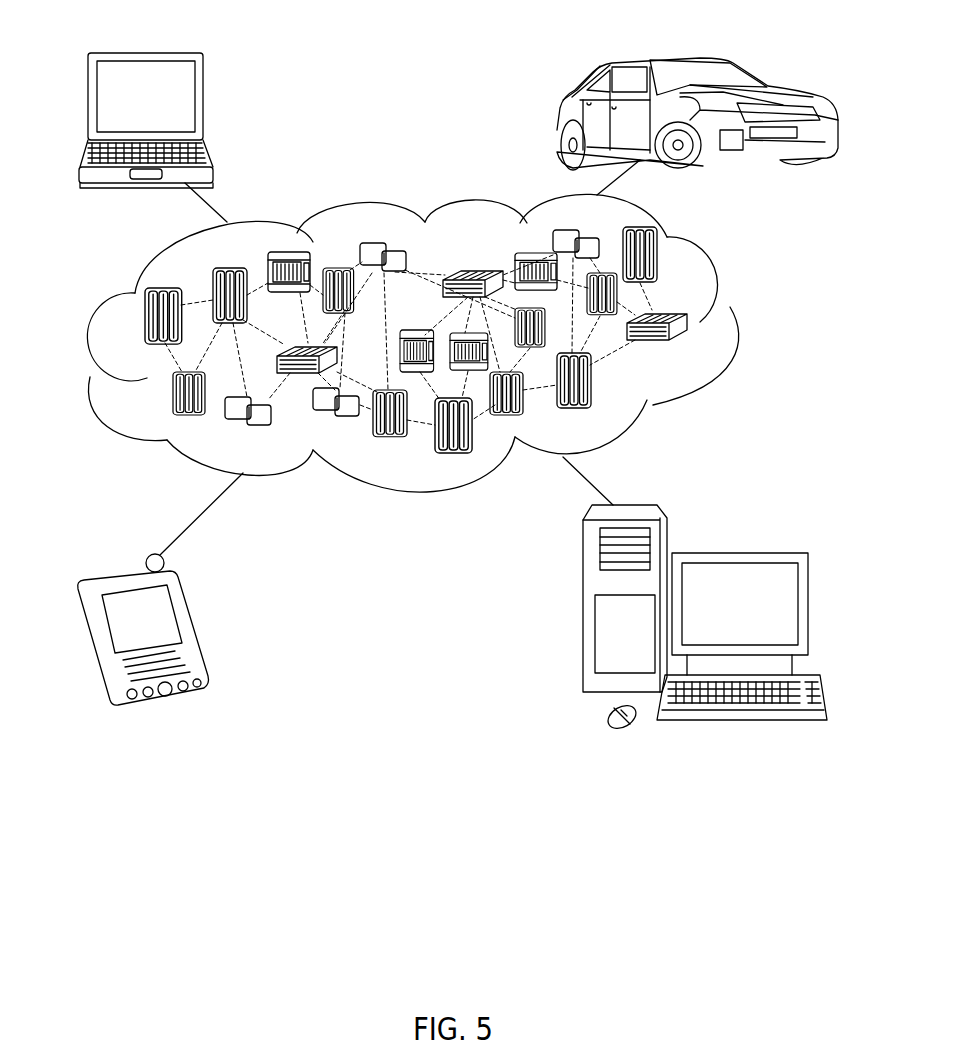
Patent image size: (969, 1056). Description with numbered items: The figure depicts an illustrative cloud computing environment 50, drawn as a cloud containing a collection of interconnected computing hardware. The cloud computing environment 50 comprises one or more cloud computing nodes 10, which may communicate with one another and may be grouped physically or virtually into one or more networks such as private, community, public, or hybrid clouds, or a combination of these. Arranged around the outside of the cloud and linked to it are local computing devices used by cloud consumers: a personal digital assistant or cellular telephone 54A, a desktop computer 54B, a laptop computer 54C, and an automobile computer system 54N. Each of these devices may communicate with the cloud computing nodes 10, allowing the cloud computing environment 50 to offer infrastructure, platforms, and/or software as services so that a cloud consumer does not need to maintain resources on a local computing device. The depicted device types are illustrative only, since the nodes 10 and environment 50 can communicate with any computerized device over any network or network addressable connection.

The cloud computing node 10 is at (690, 349).
The cloud computing environment 50 is at (738, 323).
The personal digital assistant or cellular telephone 54A is at (194, 632).
The desktop computer 54B is at (735, 552).
The laptop computer 54C is at (206, 107).
The automobile computer system 54N is at (560, 120).